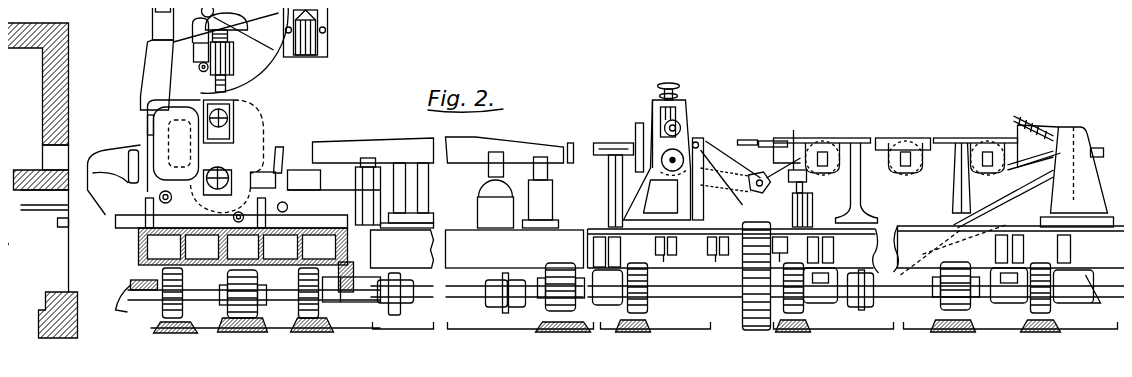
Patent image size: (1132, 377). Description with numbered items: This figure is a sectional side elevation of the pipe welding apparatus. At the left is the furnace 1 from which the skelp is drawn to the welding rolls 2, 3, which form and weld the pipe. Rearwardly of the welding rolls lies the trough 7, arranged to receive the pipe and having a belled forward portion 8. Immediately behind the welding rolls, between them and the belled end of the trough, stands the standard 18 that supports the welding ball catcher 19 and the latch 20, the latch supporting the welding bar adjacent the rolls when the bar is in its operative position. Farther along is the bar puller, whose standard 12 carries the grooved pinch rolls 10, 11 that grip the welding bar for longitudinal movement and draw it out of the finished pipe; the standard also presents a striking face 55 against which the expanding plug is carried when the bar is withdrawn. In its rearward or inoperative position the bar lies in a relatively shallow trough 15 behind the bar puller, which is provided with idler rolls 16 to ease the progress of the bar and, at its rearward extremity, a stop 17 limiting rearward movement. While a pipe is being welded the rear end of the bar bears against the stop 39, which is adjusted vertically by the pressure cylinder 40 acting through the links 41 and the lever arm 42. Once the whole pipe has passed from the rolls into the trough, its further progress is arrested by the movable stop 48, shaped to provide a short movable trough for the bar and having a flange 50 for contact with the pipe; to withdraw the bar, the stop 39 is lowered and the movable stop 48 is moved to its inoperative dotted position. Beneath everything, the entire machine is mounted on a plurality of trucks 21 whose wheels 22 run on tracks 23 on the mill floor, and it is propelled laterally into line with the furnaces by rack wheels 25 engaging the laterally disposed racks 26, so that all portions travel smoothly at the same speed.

The furnace 1 is at (74, 68).
The welding roll 2 is at (240, 97).
The welding roll 3 is at (233, 153).
The trough 7 is at (353, 140).
The belled forward portion 8 is at (318, 172).
The grooved roll 10 is at (680, 128).
The grooved roll 11 is at (697, 143).
The standard 12 is at (688, 106).
The shallow trough 15 is at (890, 137).
The idler rolls 16 is at (828, 175).
The stop 17 is at (1008, 124).
The standard 18 is at (246, 260).
The welding ball catcher 19 is at (262, 170).
The latch 20 is at (286, 157).
The trucks 21 is at (127, 312).
The wheels 22 is at (183, 276).
The tracks 23 is at (183, 328).
The rack wheels 25 is at (241, 268).
The racks 26 is at (255, 326).
The stop 39 is at (705, 141).
The pressure cylinder 40 is at (811, 212).
The links 41 is at (796, 154).
The lever arm 42 is at (742, 193).
The movable stop 48 is at (597, 137).
The flange 50 is at (601, 191).
The striking face 55 is at (636, 130).